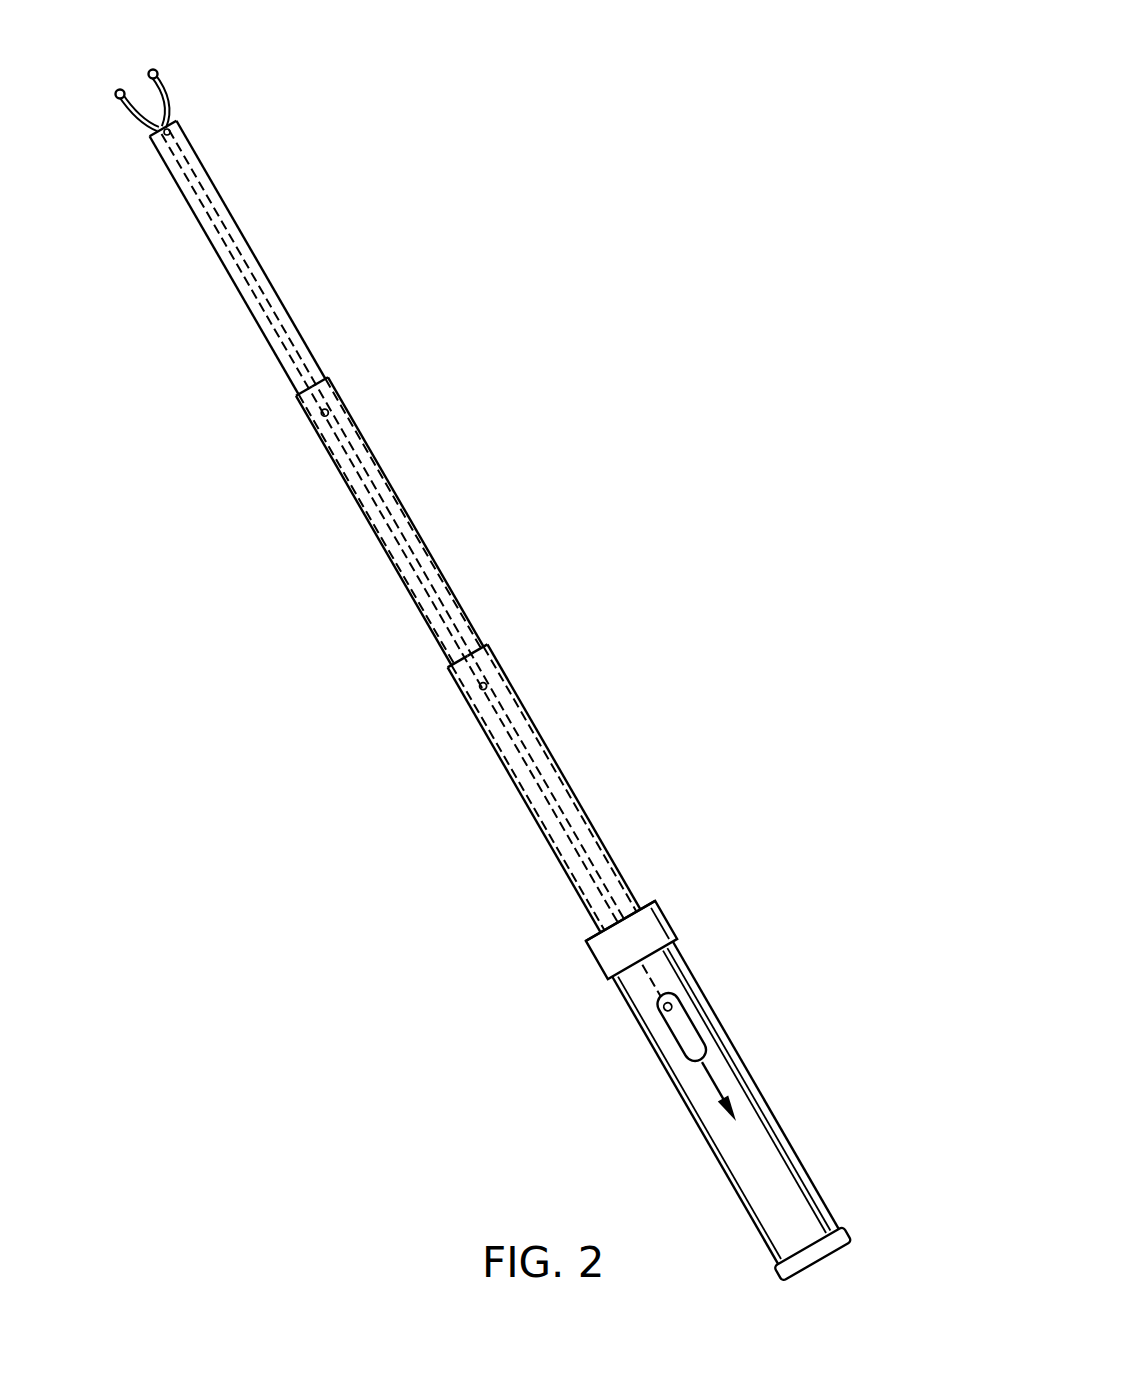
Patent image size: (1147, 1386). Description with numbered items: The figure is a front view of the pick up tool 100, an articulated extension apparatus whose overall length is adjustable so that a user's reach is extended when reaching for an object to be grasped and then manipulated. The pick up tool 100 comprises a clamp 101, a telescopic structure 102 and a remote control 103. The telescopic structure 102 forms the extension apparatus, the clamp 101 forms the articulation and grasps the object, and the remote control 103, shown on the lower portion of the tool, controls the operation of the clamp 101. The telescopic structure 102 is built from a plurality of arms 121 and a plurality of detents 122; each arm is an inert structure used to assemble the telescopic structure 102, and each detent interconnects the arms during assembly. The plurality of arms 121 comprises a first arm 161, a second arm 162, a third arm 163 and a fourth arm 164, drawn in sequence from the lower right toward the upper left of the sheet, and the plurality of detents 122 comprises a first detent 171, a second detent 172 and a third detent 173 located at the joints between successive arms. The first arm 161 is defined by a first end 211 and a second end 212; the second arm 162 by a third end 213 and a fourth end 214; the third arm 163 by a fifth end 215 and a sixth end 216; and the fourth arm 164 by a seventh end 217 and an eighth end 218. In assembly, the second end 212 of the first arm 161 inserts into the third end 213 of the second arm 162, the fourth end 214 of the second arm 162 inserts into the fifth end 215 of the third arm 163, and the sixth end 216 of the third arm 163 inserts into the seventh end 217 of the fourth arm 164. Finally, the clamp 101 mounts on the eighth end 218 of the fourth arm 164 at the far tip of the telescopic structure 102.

The pick up tool 100 is at (757, 291).
The clamp 101 is at (161, 81).
The eighth end 218 is at (176, 121).
The fourth arm 164 is at (196, 213).
The third arm 163 is at (342, 477).
The second arm 162 is at (543, 838).
The first arm 161 is at (703, 1140).
The sixth end 216 is at (327, 377).
The seventh end 217 is at (296, 388).
The fourth end 214 is at (488, 644).
The fifth end 215 is at (447, 667).
The third detent 173 is at (328, 409).
The second detent 172 is at (488, 687).
The plurality of detents 122 is at (485, 683).
The plurality of arms 121 is at (220, 267).
The first detent 171 is at (667, 927).
The second end 212 is at (643, 900).
The third end 213 is at (589, 926).
The telescopic structure 102 is at (770, 1143).
The remote control 103 is at (697, 1028).
The first end 211 is at (832, 1256).